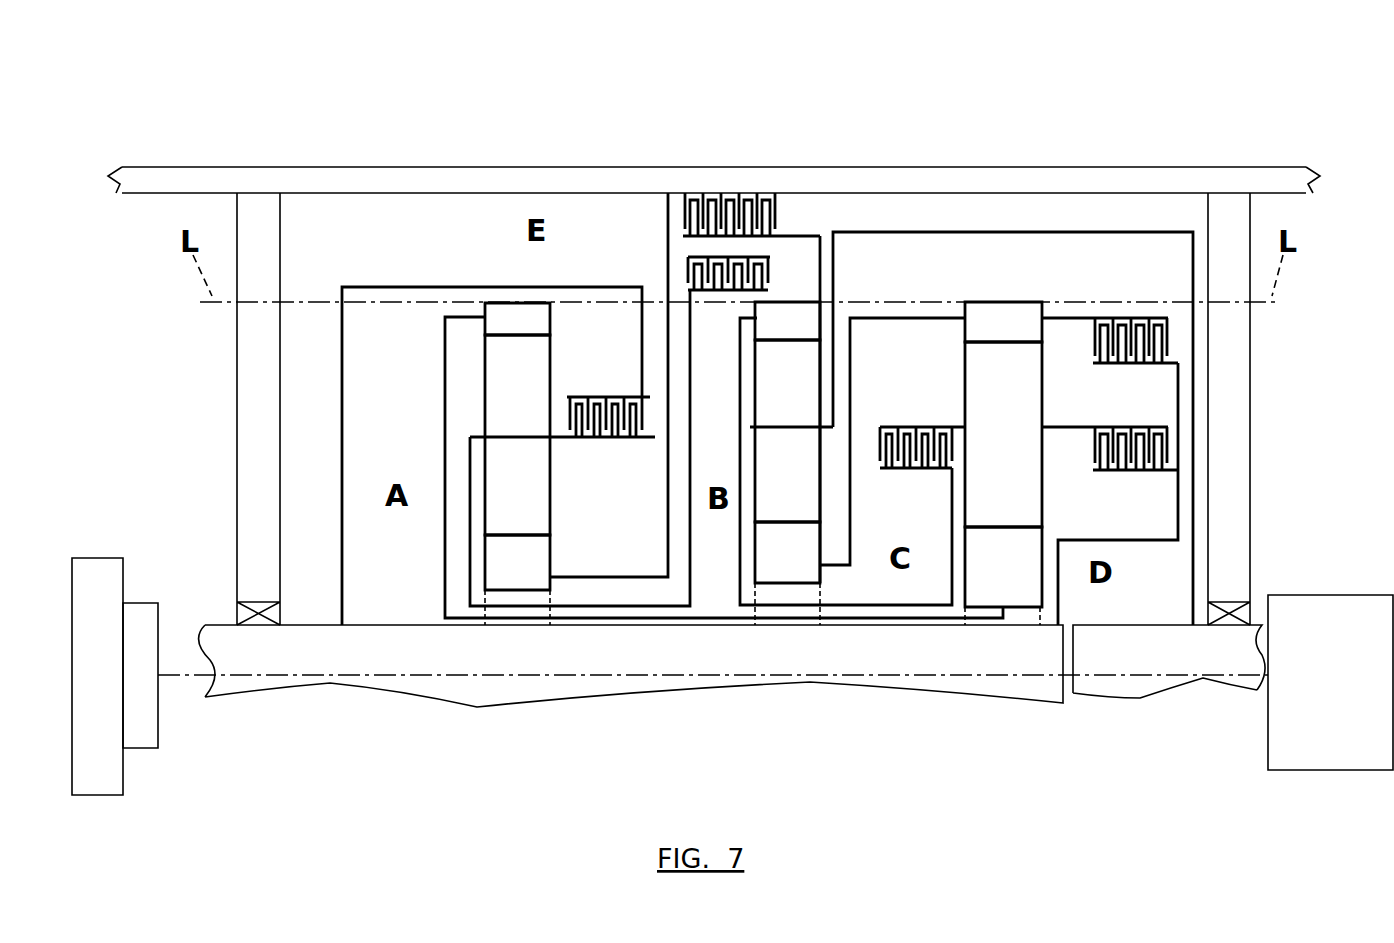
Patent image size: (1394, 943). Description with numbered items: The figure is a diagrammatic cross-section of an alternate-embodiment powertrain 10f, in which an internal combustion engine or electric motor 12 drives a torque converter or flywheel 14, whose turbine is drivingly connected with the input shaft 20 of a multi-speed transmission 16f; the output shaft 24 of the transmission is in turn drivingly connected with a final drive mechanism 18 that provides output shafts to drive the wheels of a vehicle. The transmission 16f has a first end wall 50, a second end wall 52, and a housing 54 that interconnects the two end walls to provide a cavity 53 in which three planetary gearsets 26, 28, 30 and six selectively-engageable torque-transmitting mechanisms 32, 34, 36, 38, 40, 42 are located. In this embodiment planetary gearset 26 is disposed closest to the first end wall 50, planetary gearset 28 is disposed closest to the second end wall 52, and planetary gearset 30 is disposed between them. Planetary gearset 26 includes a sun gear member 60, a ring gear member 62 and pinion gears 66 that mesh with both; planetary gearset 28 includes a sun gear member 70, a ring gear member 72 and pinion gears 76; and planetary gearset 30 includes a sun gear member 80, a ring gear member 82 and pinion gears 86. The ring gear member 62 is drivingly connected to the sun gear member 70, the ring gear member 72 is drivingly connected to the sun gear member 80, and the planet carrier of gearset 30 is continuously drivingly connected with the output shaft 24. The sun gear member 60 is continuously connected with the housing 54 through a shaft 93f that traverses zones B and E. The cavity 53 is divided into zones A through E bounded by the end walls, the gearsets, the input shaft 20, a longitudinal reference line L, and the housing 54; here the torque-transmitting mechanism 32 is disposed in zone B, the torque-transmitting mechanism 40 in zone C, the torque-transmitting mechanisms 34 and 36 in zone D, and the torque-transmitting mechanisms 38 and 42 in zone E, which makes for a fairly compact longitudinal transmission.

The powertrain 10f is at (350, 146).
The internal combustion engine or electric motor 12 is at (97, 676).
The torque converter or flywheel 14 is at (142, 675).
The transmission 16f is at (1268, 343).
The final drive mechanism 18 is at (1268, 745).
The input shaft 20 is at (497, 710).
The output shaft 24 is at (1143, 698).
The planetary gearset 26 is at (527, 602).
The planetary gearset 28 is at (1027, 613).
The planetary gearset 30 is at (781, 597).
The torque-transmitting mechanism 32 is at (580, 440).
The torque-transmitting mechanism 34 is at (1097, 365).
The torque-transmitting mechanism 36 is at (1097, 472).
The torque-transmitting mechanism 38 is at (705, 292).
The torque-transmitting mechanism 40 is at (885, 470).
The torque-transmitting mechanism 42 is at (707, 193).
The first end wall 50 is at (237, 218).
The second end wall 52 is at (1253, 417).
The cavity 53 is at (1150, 212).
The housing 54 is at (1022, 168).
The sun gear member 60 is at (517, 562).
The ring gear member 62 is at (505, 320).
The pinion gears 66 is at (517, 435).
The sun gear member 70 is at (1003, 567).
The ring gear member 72 is at (1003, 322).
The pinion gears 76 is at (1003, 434).
The sun gear member 80 is at (787, 552).
The ring gear member 82 is at (787, 321).
The pinion gears 86 is at (787, 431).
The shaft 93f is at (665, 225).